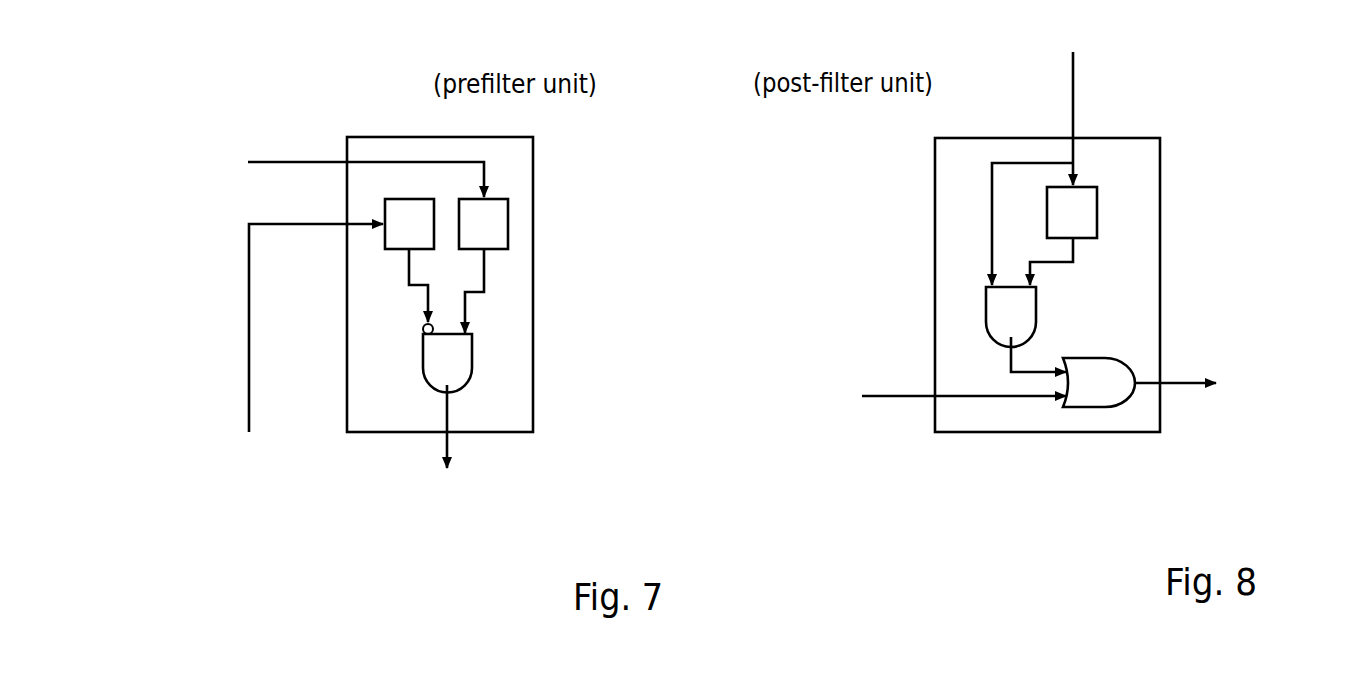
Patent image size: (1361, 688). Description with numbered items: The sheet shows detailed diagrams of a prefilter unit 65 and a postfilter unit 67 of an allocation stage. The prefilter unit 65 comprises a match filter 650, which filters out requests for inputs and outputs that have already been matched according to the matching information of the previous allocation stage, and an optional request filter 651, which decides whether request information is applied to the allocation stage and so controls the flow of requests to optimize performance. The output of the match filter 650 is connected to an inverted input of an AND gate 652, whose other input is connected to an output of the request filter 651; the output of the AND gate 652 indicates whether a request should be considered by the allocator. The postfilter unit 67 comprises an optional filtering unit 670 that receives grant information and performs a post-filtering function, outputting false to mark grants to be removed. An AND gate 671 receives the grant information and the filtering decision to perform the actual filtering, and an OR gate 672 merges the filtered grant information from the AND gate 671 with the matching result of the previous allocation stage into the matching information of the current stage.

In FIG. 7, the prefilter unit 65 is at (452, 137).
In FIG. 7, the match filter 650 is at (216, 198).
In FIG. 7, the request filter 651 is at (465, 238).
In FIG. 7, the AND gate 652 is at (466, 366).
In FIG. 8, the postfilter unit 67 is at (1007, 138).
In FIG. 8, the filtering unit 670 is at (1091, 227).
In FIG. 8, the AND gate 671 is at (878, 295).
In FIG. 8, the OR gate 672 is at (1105, 512).